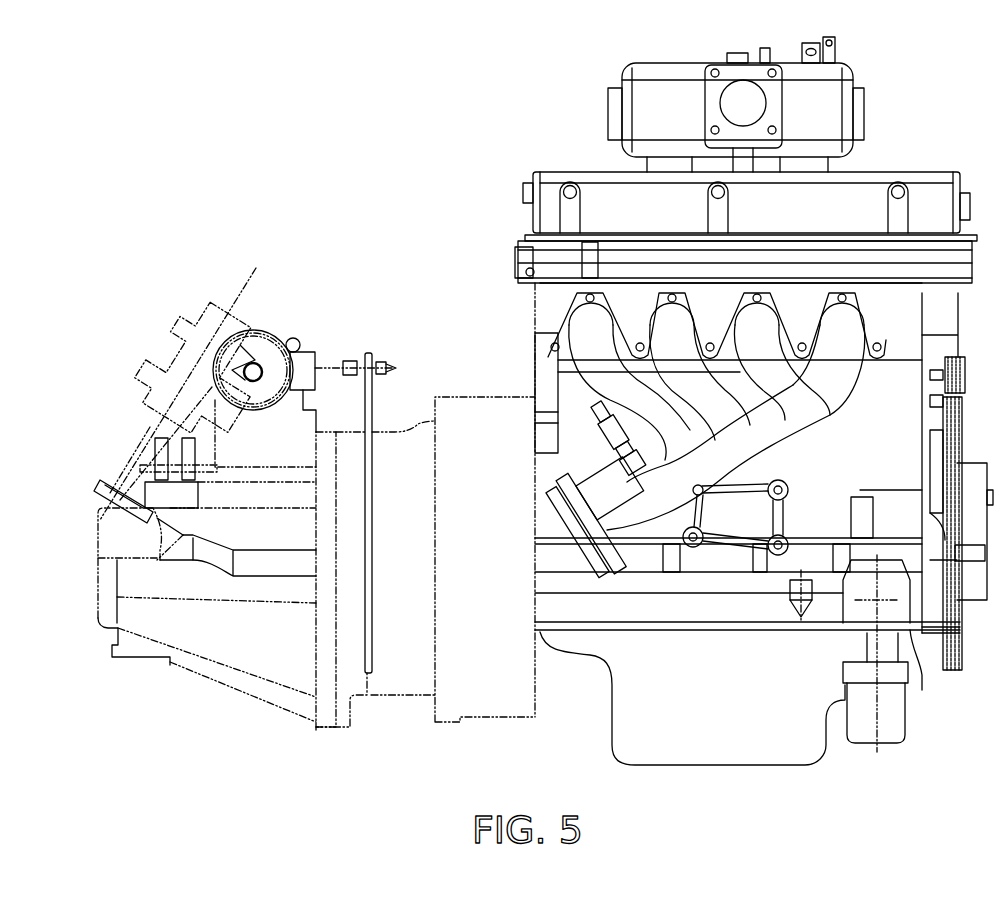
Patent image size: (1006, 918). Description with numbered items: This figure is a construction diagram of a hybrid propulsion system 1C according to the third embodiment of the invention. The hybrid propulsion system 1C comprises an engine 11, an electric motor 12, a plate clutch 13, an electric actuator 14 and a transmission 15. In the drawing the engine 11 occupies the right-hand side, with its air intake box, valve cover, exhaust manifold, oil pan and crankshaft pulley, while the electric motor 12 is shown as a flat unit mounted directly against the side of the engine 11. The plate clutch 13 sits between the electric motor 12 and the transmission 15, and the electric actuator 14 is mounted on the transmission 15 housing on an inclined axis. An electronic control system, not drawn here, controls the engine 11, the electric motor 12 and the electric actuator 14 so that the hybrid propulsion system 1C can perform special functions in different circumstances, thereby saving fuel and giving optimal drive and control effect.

The engine 11 is at (890, 158).
The hybrid propulsion system 1C is at (239, 182).
The electric motor 12 is at (494, 720).
The plate clutch 13 is at (402, 703).
The electric actuator 14 is at (192, 294).
The transmission 15 is at (192, 685).